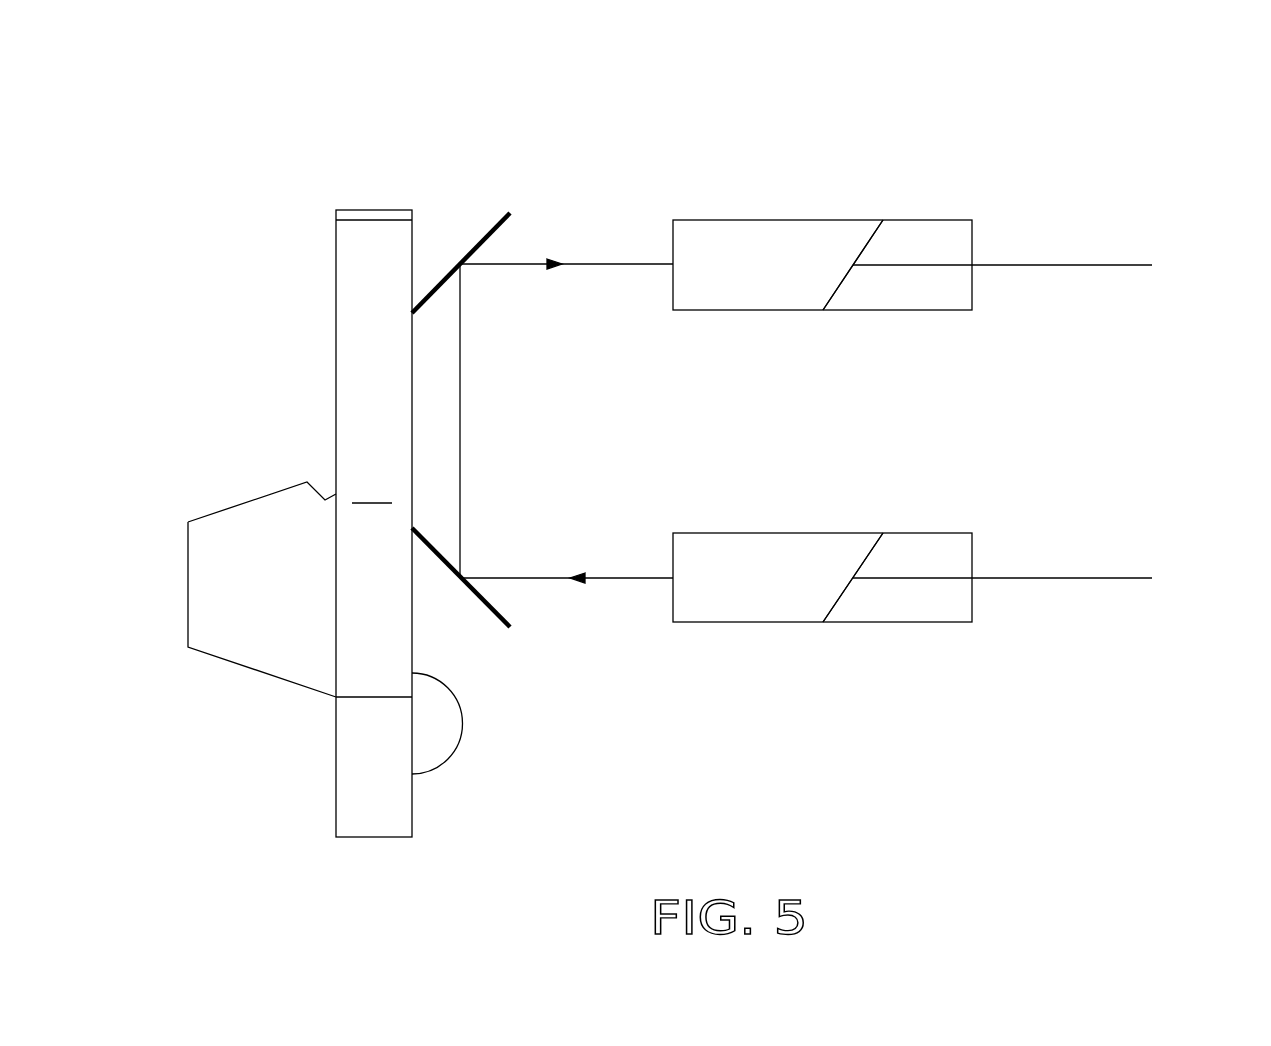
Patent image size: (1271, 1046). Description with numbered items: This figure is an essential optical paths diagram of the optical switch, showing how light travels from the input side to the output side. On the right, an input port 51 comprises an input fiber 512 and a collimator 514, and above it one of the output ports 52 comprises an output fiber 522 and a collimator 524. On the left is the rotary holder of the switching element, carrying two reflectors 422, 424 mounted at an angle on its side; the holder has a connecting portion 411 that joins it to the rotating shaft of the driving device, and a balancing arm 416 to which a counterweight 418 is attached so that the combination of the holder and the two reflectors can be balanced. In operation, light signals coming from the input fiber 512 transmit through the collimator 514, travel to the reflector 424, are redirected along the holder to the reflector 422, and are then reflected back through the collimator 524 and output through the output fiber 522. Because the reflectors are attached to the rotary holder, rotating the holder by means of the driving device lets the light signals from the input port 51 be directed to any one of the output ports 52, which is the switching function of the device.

The connecting portion 411 is at (263, 530).
The balancing arm 416 is at (382, 805).
The counterweight 418 is at (437, 733).
The reflector 422 is at (492, 238).
The reflector 424 is at (497, 604).
The input port 51 is at (1225, 740).
The input fiber 512 is at (1070, 578).
The collimator 514 is at (778, 587).
The output port 52 is at (1225, 105).
The output fiber 522 is at (1083, 265).
The collimator 524 is at (800, 248).